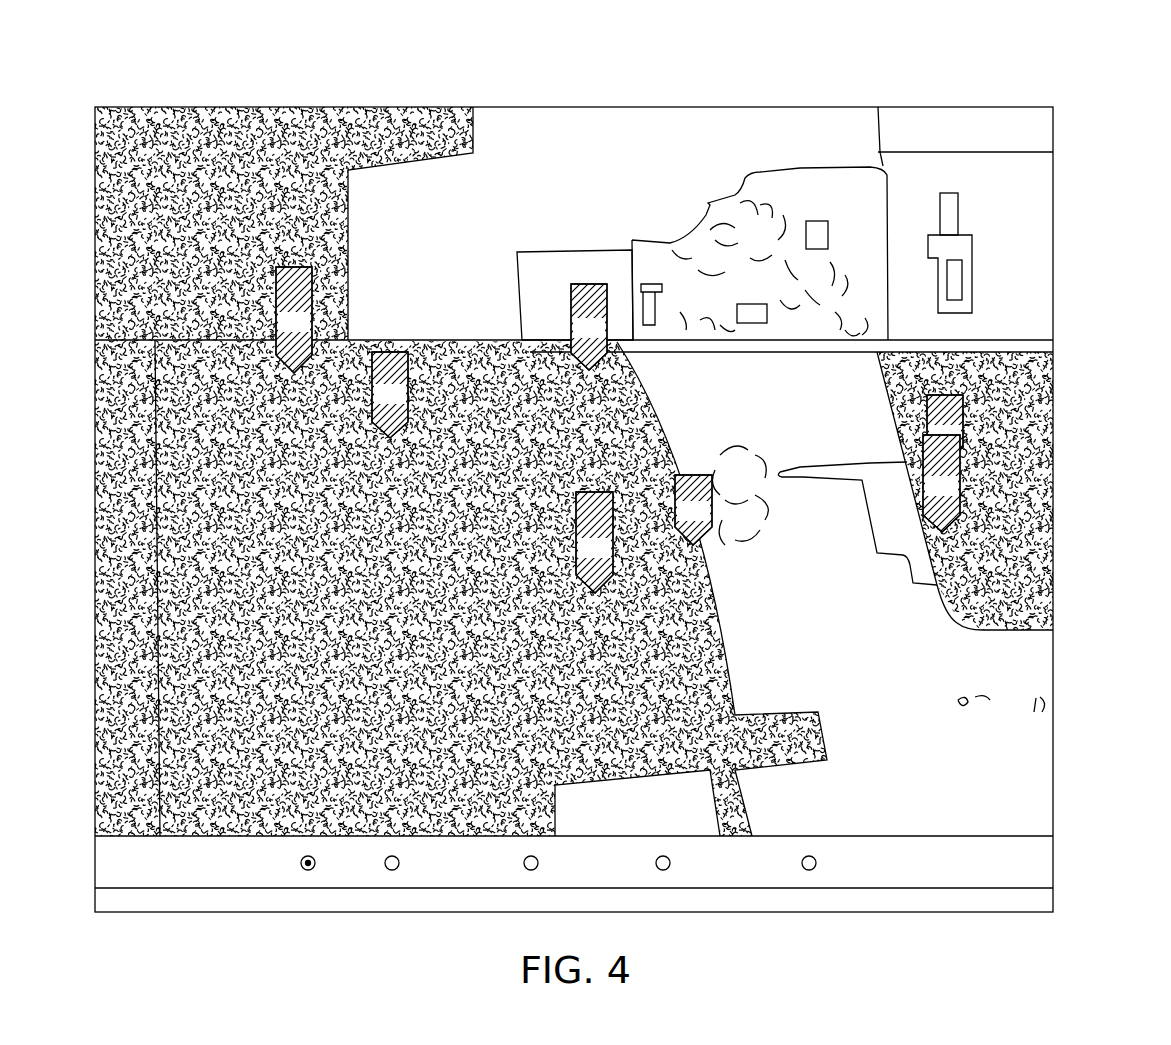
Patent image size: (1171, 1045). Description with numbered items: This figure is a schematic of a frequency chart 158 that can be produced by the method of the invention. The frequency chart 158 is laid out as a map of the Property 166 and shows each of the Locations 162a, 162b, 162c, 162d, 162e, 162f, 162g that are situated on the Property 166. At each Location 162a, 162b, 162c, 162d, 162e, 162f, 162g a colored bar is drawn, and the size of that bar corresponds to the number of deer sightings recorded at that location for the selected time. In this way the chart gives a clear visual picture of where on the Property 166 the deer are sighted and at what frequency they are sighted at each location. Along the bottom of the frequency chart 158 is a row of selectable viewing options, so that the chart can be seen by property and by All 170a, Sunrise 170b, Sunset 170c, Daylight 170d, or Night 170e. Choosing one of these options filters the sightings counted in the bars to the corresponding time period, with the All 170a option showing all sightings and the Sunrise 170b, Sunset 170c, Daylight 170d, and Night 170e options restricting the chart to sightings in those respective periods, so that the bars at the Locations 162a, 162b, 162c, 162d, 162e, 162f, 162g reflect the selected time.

The frequency chart 158 is at (1097, 108).
The Location 162a is at (292, 267).
The Location 162b is at (390, 352).
The Location 162c is at (589, 284).
The Location 162d is at (692, 475).
The Location 162e is at (607, 568).
The Location 162f is at (973, 410).
The Location 162g is at (960, 452).
The Property 166 is at (940, 742).
The All 170a is at (331, 878).
The Sunrise 170b is at (446, 878).
The Sunset 170c is at (580, 842).
The Daylight 170d is at (720, 878).
The Night 170e is at (840, 878).